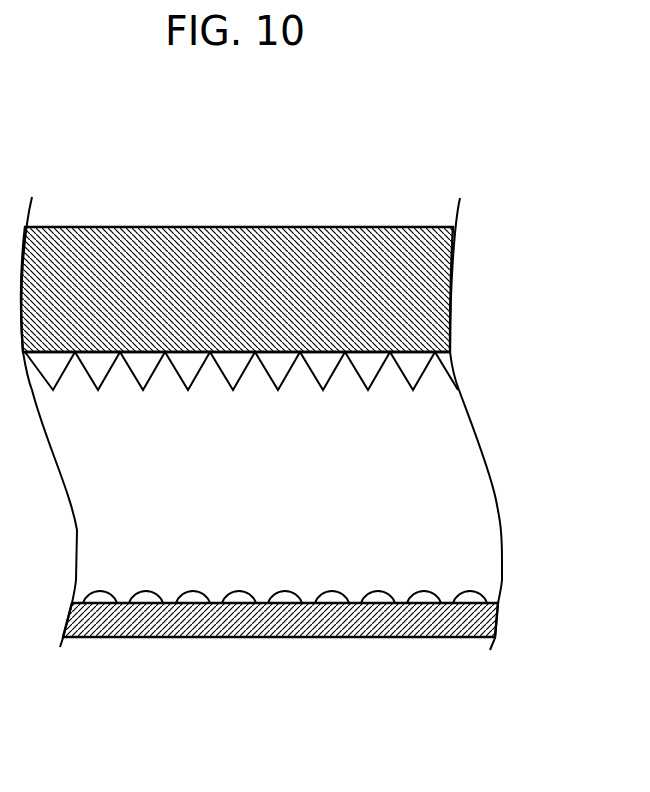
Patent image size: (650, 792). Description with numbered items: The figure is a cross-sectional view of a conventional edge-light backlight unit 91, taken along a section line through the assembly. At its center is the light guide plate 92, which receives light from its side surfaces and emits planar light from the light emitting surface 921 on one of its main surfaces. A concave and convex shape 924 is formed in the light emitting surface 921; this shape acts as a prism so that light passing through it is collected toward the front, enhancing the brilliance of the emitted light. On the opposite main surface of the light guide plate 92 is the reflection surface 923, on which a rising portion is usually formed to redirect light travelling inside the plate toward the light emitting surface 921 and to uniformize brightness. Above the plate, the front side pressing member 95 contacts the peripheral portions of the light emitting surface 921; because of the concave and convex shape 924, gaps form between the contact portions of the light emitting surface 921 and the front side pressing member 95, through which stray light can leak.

The backlight unit 91 is at (160, 202).
The light guide plate 92 is at (460, 488).
The front side pressing member 95 is at (297, 250).
The light emitting surface 921 is at (370, 351).
The reflection surface 923 is at (417, 606).
The concave and convex shape 924 is at (397, 383).